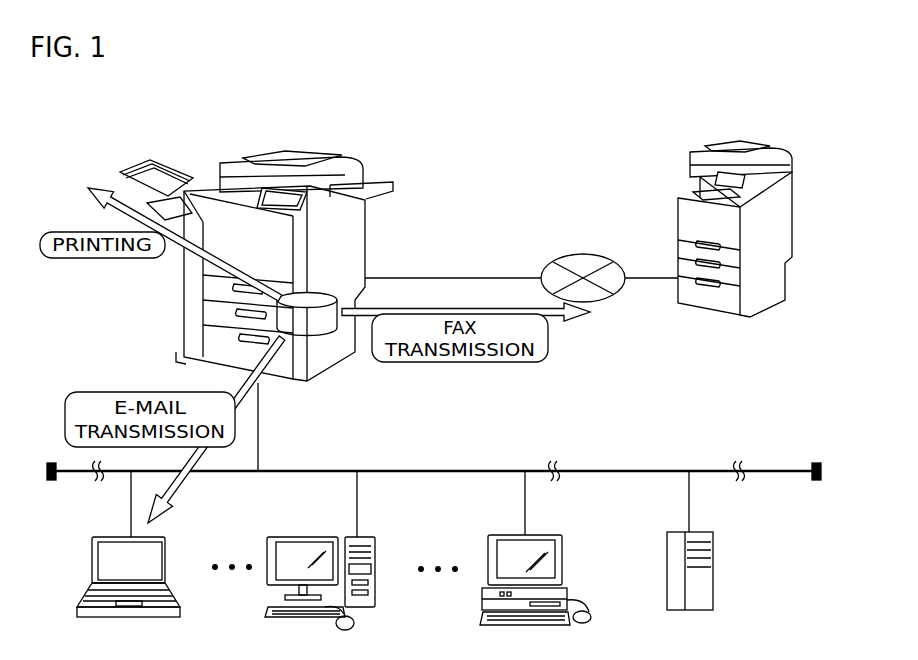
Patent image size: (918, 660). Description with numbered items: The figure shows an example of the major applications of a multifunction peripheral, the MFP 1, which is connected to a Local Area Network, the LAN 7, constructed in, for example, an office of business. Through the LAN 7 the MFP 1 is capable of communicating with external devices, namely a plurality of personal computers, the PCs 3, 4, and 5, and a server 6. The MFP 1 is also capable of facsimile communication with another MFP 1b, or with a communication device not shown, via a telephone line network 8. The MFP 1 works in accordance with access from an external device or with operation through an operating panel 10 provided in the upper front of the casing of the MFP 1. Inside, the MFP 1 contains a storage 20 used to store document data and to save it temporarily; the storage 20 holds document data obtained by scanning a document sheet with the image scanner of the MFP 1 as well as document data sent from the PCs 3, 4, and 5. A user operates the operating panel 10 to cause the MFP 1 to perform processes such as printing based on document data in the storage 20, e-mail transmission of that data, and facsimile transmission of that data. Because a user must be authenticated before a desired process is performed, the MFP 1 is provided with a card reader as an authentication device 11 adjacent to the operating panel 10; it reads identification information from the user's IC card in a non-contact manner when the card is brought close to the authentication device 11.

The MFP 1 is at (277, 262).
The another MFP 1b is at (794, 223).
The personal computer 3 is at (167, 578).
The personal computer 4 is at (378, 586).
The personal computer 5 is at (567, 571).
The server 6 is at (718, 571).
The Local Area Network 7 is at (447, 470).
The telephone line network 8 is at (587, 264).
The operating panel 10 is at (310, 194).
The authentication device 11 is at (355, 159).
The storage 20 is at (322, 362).